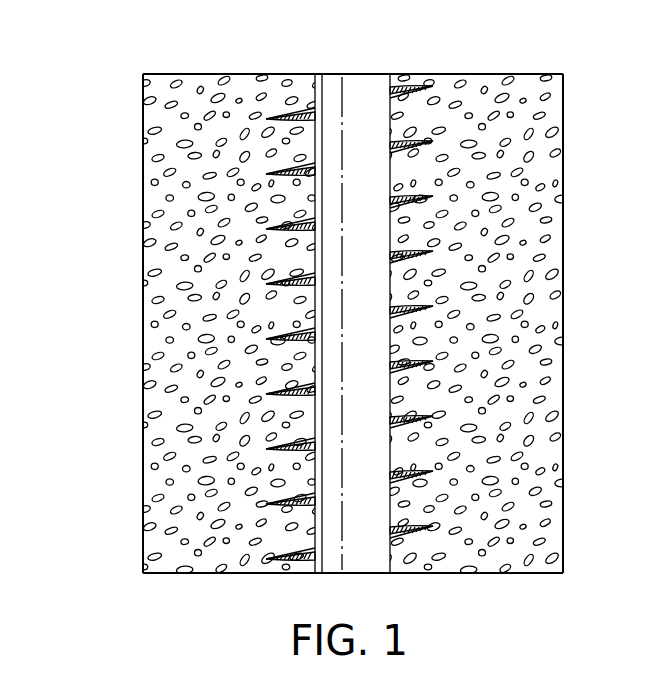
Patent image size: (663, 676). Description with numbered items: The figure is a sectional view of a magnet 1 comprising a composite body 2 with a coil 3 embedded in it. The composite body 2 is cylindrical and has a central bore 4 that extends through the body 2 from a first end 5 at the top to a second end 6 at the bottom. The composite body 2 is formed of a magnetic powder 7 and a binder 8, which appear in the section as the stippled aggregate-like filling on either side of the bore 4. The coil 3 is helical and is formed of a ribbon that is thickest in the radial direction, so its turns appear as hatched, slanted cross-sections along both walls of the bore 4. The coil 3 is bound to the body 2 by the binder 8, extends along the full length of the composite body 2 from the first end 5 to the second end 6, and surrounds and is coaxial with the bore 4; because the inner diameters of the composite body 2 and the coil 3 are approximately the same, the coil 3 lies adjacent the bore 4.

The magnet 1 is at (102, 112).
The composite body 2 is at (143, 383).
The coil 3 is at (419, 84).
The central bore 4 is at (359, 343).
The first end 5 is at (216, 74).
The second end 6 is at (216, 573).
The magnetic powder 7 is at (557, 261).
The binder 8 is at (556, 390).